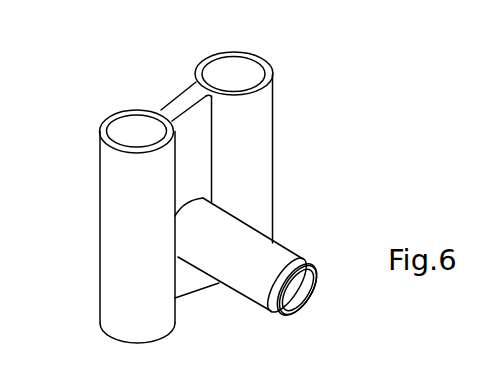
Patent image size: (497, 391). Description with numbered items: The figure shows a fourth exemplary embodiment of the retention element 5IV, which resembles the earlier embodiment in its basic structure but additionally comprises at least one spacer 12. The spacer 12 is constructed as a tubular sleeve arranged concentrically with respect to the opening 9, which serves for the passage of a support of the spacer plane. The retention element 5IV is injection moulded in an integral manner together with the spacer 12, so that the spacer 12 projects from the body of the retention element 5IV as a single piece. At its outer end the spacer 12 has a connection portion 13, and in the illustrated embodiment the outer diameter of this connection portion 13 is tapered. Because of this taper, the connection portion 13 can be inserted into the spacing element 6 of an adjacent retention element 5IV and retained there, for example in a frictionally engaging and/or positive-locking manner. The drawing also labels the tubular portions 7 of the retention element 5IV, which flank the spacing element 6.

The retention element 5IV is at (143, 82).
The tube 7 is at (113, 203).
The spacing element 6 is at (195, 147).
The spacer 12 is at (247, 283).
The connection portion 13 is at (298, 263).
The opening 9 is at (311, 300).